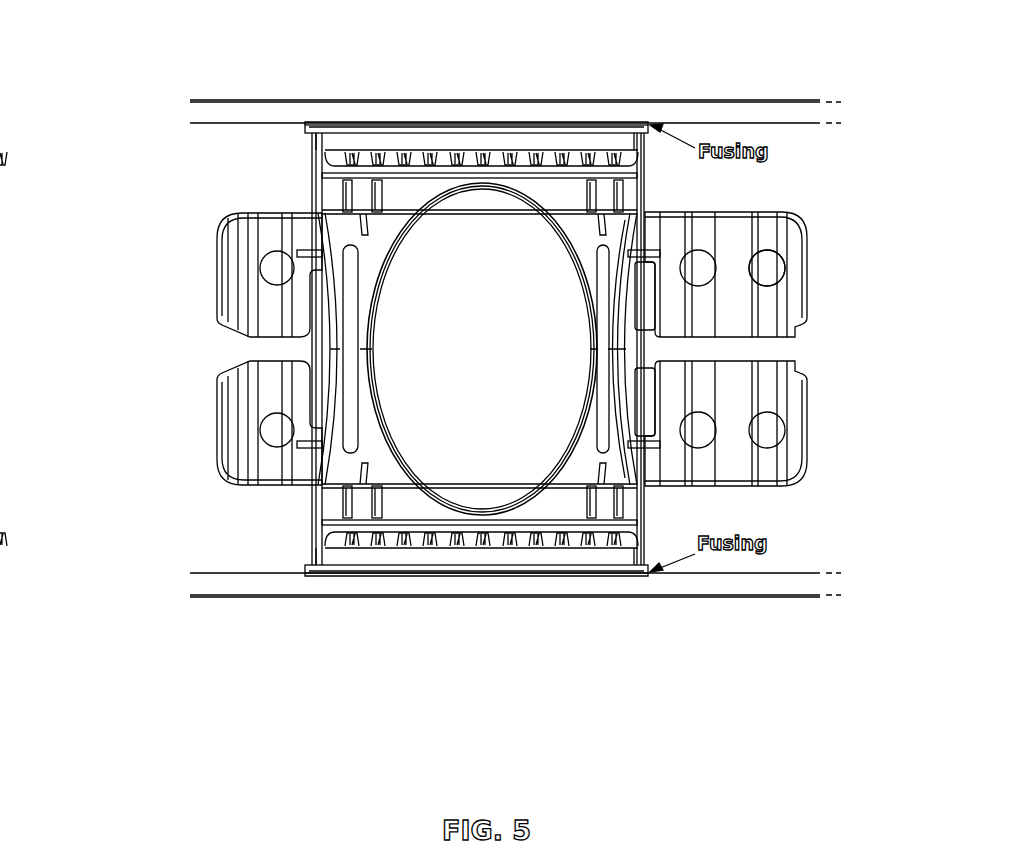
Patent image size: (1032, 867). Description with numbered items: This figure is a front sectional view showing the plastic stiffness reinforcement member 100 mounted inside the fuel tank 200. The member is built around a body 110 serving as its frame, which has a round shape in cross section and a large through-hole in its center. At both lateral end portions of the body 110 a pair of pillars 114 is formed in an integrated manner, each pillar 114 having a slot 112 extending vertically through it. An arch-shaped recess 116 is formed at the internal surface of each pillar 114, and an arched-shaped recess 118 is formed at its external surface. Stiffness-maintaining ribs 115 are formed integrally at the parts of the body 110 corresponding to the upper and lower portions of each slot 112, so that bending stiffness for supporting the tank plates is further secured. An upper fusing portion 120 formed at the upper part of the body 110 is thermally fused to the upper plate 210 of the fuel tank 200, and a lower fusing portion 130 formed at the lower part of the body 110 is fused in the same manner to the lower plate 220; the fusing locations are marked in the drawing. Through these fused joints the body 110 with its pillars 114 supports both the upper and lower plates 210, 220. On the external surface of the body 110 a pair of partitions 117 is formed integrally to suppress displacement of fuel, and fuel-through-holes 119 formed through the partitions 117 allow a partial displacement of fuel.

The stiffness reinforcement member 100 is at (454, 349).
The body 110 is at (648, 195).
The slot 112 is at (603, 284).
The pillar 114 is at (580, 318).
The arch-shaped recess 116 is at (590, 373).
The stiffness-maintaining rib 115 is at (392, 232).
The partition 117 is at (808, 219).
The arched-shaped recess 118 is at (628, 330).
The fuel-through-hole 119 is at (770, 272).
The upper fusing portion 120 is at (303, 150).
The lower fusing portion 130 is at (303, 550).
The fuel tank 200 is at (719, 99).
The upper plate 210 is at (776, 110).
The lower plate 220 is at (690, 590).